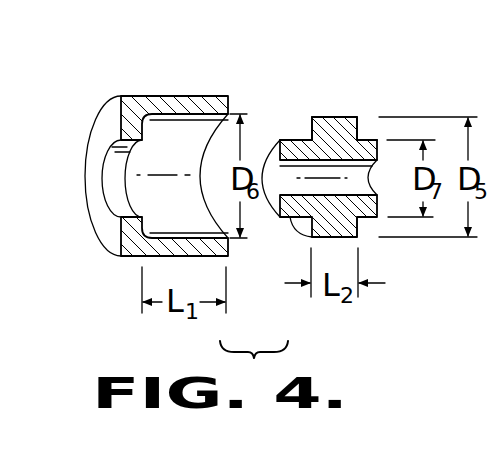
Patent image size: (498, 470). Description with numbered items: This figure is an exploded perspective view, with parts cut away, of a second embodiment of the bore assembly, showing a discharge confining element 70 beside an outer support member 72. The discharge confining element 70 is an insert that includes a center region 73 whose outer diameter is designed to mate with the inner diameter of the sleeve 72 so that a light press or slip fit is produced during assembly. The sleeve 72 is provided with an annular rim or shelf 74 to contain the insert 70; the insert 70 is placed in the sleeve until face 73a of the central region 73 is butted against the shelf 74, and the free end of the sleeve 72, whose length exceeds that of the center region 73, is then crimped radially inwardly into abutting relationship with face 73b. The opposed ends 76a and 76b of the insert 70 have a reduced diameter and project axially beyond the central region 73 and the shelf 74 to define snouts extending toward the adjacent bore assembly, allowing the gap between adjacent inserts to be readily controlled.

The discharge confining element 70 is at (333, 155).
The outer support member 72 is at (164, 103).
The center region 73 is at (323, 97).
The face 73a is at (302, 133).
The face 73b is at (363, 130).
The annular rim or shelf 74 is at (112, 136).
The opposed end 76a is at (290, 216).
The opposed end 76b is at (363, 218).